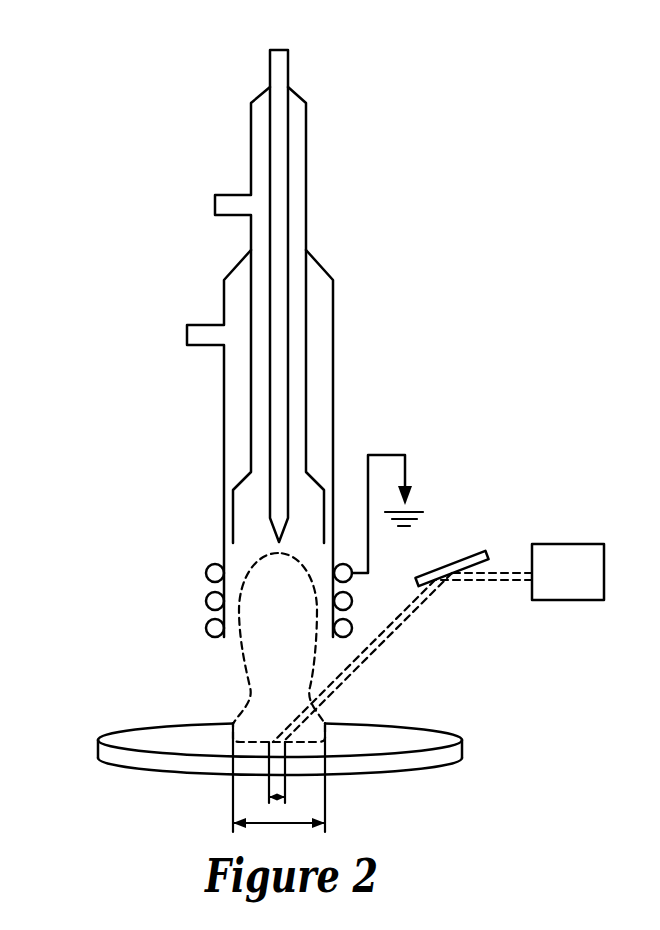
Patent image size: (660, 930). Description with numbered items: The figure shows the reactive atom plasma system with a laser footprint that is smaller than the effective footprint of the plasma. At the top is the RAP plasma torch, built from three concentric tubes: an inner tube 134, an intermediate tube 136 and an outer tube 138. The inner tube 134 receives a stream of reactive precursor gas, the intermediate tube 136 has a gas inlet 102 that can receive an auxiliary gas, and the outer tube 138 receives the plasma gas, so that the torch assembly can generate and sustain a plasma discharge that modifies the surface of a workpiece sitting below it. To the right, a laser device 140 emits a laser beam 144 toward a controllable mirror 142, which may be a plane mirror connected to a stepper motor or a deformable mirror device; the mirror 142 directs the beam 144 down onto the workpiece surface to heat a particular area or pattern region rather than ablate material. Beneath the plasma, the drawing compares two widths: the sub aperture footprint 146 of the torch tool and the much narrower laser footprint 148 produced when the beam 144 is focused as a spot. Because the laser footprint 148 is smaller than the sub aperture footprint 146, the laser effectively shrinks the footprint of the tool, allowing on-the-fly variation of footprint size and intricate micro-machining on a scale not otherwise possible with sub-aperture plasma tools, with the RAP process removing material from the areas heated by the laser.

The gas inlet 102 is at (313, 343).
The inner tube 134 is at (288, 173).
The intermediate tube 136 is at (306, 223).
The outer tube 138 is at (333, 342).
The laser device 140 is at (558, 544).
The controllable mirror 142 is at (452, 560).
The laser beam 144 is at (388, 638).
The sub aperture footprint 146 is at (320, 818).
The laser footprint 148 is at (272, 797).